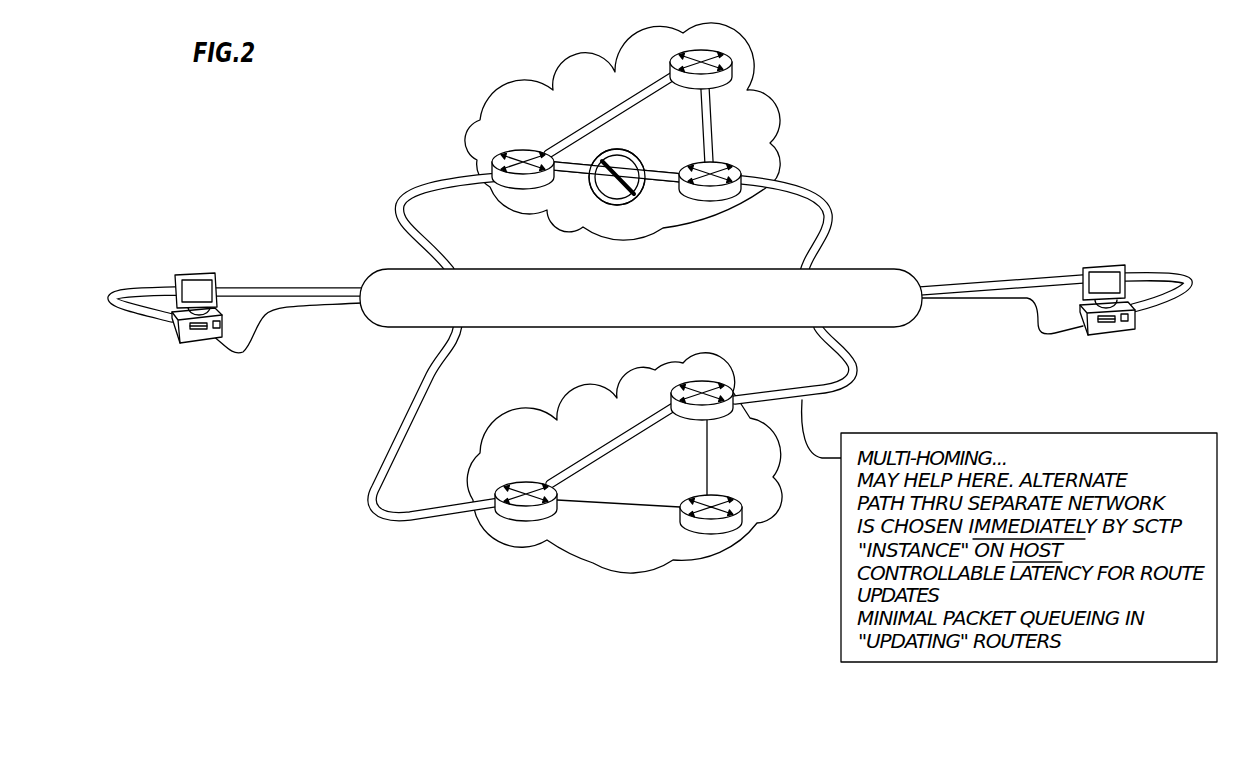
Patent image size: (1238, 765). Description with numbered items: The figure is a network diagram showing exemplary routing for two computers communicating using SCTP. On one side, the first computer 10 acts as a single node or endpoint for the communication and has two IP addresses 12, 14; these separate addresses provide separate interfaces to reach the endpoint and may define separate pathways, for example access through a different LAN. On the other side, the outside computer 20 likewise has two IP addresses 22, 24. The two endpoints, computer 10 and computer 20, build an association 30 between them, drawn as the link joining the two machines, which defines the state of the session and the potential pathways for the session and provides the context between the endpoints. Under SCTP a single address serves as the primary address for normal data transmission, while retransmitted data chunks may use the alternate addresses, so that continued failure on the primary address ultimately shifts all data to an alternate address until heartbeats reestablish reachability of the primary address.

The first computer 10 is at (180, 272).
The IP address 12 is at (147, 353).
The IP address 14 is at (245, 383).
The outside computer 20 is at (1100, 266).
The IP address 22 is at (980, 360).
The IP address 24 is at (1138, 340).
The association 30 is at (875, 268).